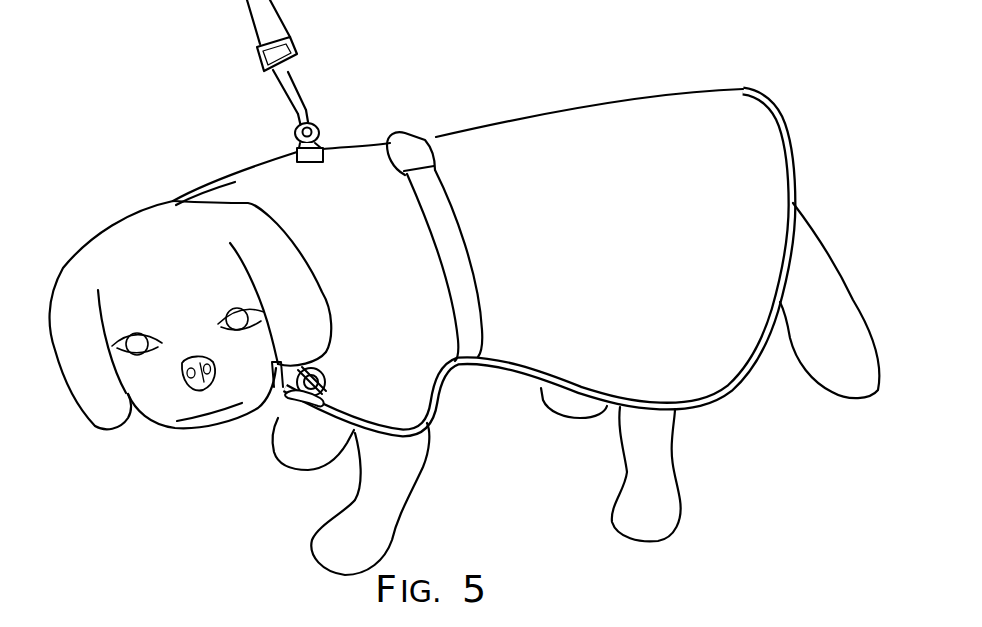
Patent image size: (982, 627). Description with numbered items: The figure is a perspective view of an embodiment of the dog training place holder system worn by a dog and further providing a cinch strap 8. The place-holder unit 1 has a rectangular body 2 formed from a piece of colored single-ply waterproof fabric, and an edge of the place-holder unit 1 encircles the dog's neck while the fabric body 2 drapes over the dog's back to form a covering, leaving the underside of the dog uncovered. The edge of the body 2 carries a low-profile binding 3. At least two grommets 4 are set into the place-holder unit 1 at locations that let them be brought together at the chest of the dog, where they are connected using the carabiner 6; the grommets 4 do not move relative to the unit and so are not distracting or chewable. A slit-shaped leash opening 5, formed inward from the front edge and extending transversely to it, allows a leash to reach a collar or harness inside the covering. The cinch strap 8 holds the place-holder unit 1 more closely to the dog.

The place-holder unit 1 is at (677, 62).
The rectangular body 2 is at (539, 162).
The low-profile binding 3 is at (711, 403).
The grommets 4 is at (326, 372).
The leash opening 5 is at (324, 147).
The carabiner 6 is at (321, 403).
The cinch strap 8 is at (465, 257).